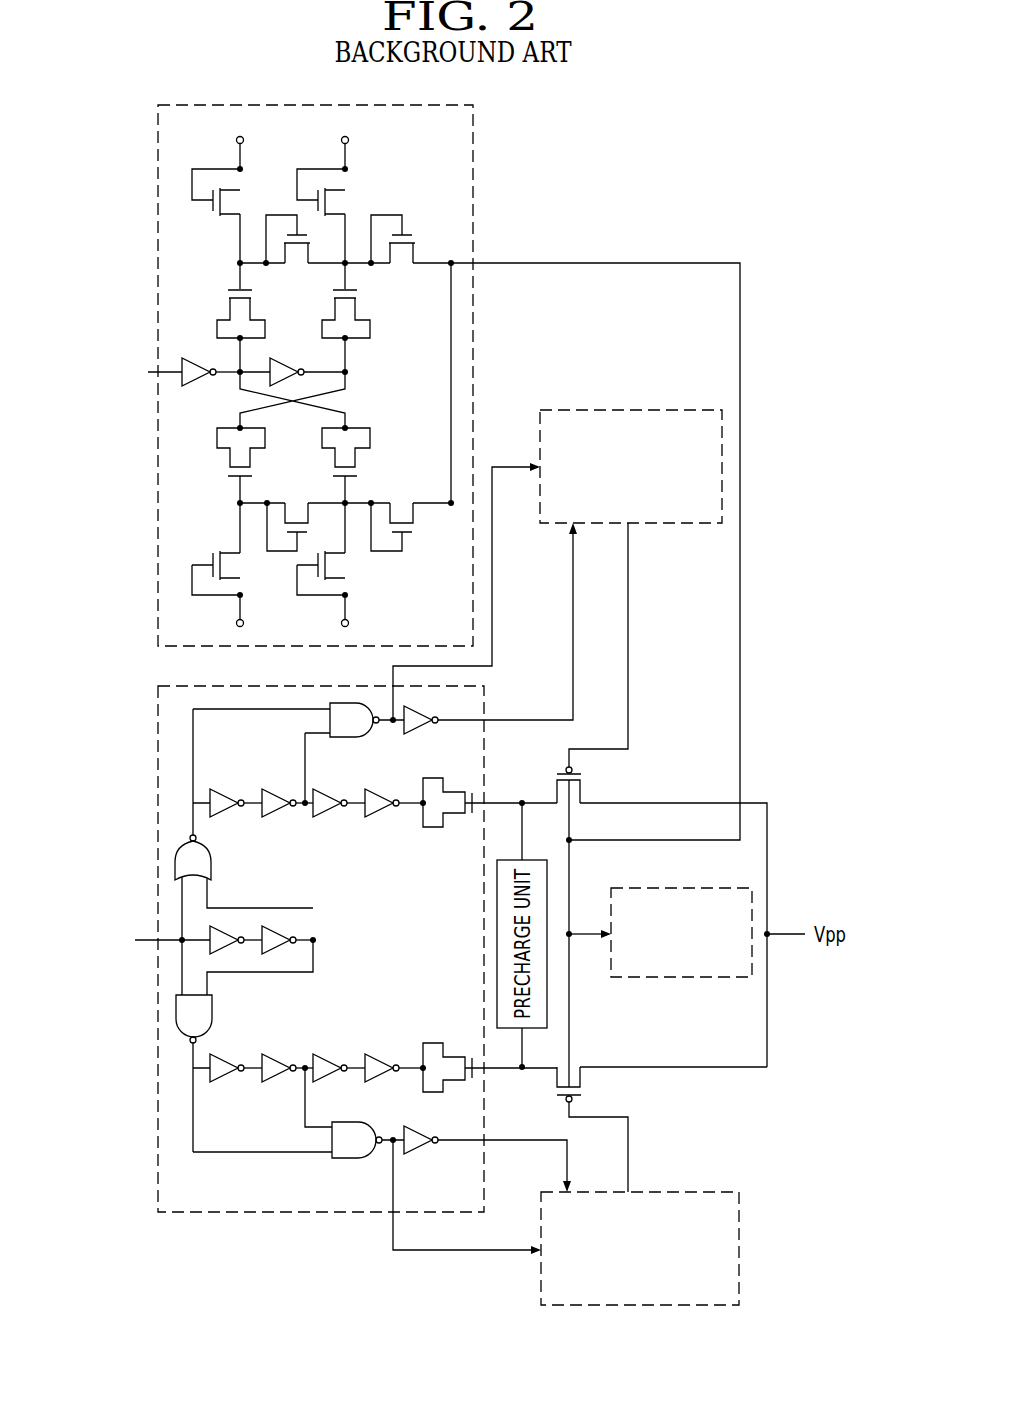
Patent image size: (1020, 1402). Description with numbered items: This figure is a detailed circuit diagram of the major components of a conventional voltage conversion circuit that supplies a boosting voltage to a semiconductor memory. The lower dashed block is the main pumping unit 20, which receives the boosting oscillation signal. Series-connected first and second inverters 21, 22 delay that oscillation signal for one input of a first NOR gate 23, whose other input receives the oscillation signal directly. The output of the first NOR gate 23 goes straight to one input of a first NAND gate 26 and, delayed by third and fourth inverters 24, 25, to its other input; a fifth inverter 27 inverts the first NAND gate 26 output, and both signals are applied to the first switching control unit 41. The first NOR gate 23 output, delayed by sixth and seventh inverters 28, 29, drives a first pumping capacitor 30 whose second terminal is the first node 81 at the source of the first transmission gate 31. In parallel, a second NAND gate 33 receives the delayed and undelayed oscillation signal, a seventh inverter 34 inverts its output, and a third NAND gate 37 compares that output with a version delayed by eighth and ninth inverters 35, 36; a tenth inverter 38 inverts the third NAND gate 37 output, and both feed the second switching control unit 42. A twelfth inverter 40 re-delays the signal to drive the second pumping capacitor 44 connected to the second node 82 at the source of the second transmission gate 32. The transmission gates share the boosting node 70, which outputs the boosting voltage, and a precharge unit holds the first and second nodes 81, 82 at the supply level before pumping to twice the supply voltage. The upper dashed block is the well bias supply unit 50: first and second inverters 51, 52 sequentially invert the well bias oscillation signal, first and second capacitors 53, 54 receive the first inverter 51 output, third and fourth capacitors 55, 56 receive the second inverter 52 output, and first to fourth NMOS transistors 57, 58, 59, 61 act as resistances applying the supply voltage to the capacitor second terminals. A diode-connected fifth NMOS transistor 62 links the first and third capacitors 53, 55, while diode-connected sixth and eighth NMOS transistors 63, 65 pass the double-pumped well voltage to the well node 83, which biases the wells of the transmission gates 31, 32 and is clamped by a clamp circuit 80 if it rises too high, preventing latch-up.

The main pumping unit 20 is at (291, 1213).
The first inverter 21 is at (236, 930).
The second inverter 22 is at (287, 931).
The first NOR gate 23 is at (244, 887).
The third inverter 24 is at (236, 791).
The fourth inverter 25 is at (287, 791).
The first NAND gate 26 is at (298, 753).
The fifth inverter 27 is at (490, 639).
The sixth inverter 28 is at (339, 791).
The seventh inverter 29 is at (394, 791).
The first pumping capacitor 30 is at (490, 817).
The first transmission gate 31 is at (592, 663).
The second transmission gate 32 is at (592, 1129).
The second NAND gate 33 is at (207, 1019).
The seventh inverter 34 is at (236, 1058).
The eighth inverter 35 is at (287, 1058).
The ninth inverter 36 is at (339, 1058).
The third NAND gate 37 is at (298, 1128).
The tenth inverter 38 is at (487, 1159).
The twelfth inverter 40 is at (394, 1058).
The first switching control unit 41 is at (626, 410).
The second switching control unit 42 is at (740, 1247).
The second pumping capacitor 44 is at (490, 1059).
The well bias supply unit 50 is at (474, 151).
The first inverter 51 is at (211, 363).
The second inverter 52 is at (292, 363).
The first capacitor 53 is at (234, 331).
The second capacitor 54 is at (353, 452).
The third capacitor 55 is at (353, 331).
The fourth capacitor 56 is at (233, 452).
The first NMOS transistor 57 is at (226, 192).
The second NMOS transistor 58 is at (331, 192).
The third NMOS transistor 59 is at (229, 573).
The fourth NMOS transistor 61 is at (334, 573).
The fifth NMOS transistor 62 is at (288, 252).
The sixth NMOS transistor 63 is at (289, 514).
The eighth NMOS transistor 65 is at (393, 514).
The boosting node 70 is at (768, 930).
The clamp circuit 80 is at (678, 978).
The first node 81 is at (522, 800).
The second node 82 is at (522, 1070).
The well node 83 is at (451, 262).